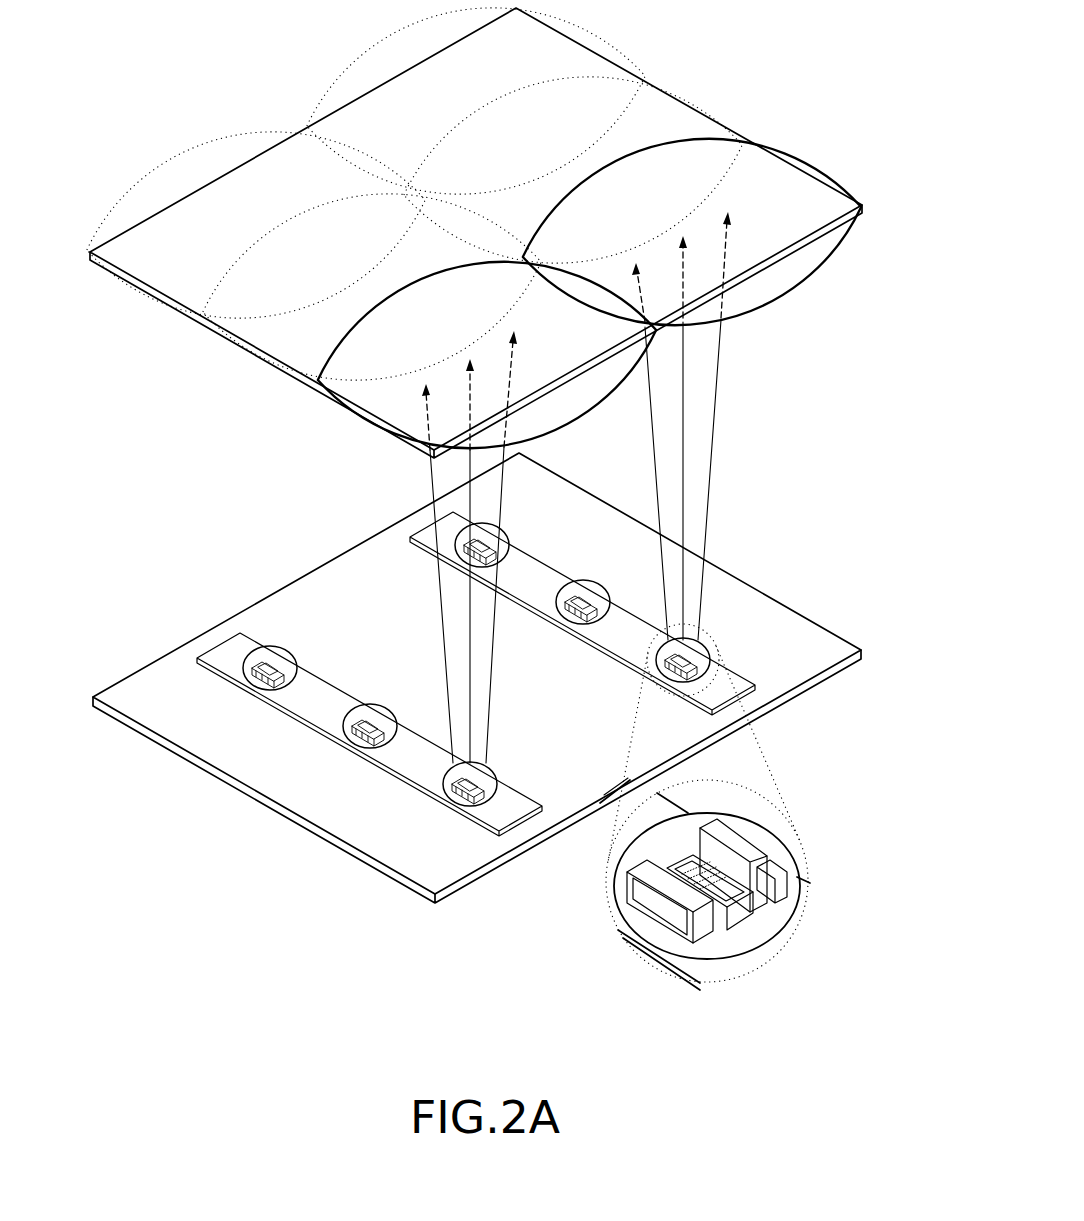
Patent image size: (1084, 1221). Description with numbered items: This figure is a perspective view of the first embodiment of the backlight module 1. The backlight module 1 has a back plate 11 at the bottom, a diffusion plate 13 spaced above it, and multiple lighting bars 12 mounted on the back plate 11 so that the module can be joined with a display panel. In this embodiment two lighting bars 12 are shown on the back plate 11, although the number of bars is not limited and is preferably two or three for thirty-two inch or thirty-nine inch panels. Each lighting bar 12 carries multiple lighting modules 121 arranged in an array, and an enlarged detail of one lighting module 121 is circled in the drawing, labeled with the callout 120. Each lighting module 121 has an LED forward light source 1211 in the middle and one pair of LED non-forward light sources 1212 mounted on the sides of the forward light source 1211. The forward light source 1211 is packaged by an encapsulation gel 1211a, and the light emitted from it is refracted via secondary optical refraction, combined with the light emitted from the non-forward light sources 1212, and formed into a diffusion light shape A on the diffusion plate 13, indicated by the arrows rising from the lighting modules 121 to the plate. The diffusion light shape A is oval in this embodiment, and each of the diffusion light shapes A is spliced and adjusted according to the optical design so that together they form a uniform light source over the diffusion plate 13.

The backlight module 1 is at (137, 21).
The back plate 11 is at (155, 680).
The lighting bar 12 is at (217, 653).
The diffusion plate 13 is at (266, 170).
The light emitting unit 120 is at (615, 888).
The lighting module 121 is at (288, 642).
The LED forward light source 1211 is at (740, 932).
The encapsulation gel 1211a is at (723, 883).
The LED non-forward light source 1212 is at (788, 910).
The diffusion light shape A is at (619, 386).